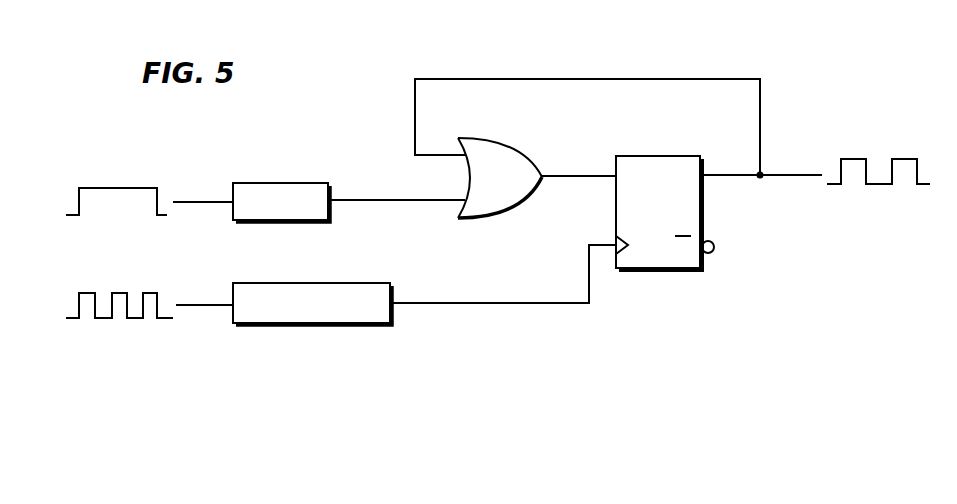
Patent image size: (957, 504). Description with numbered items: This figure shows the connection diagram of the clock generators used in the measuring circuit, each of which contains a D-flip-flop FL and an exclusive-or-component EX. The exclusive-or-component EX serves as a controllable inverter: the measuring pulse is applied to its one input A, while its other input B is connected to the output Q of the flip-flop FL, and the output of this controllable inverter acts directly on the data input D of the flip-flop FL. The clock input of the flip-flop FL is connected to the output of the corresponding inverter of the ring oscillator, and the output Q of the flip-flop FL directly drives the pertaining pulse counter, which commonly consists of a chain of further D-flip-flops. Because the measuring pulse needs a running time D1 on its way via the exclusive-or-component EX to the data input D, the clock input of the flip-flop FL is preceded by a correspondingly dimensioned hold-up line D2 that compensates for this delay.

The running time D1 is at (281, 202).
The hold-up line D2 is at (312, 304).
The exclusive-or-component EX is at (500, 178).
The flip-flop FL is at (665, 213).